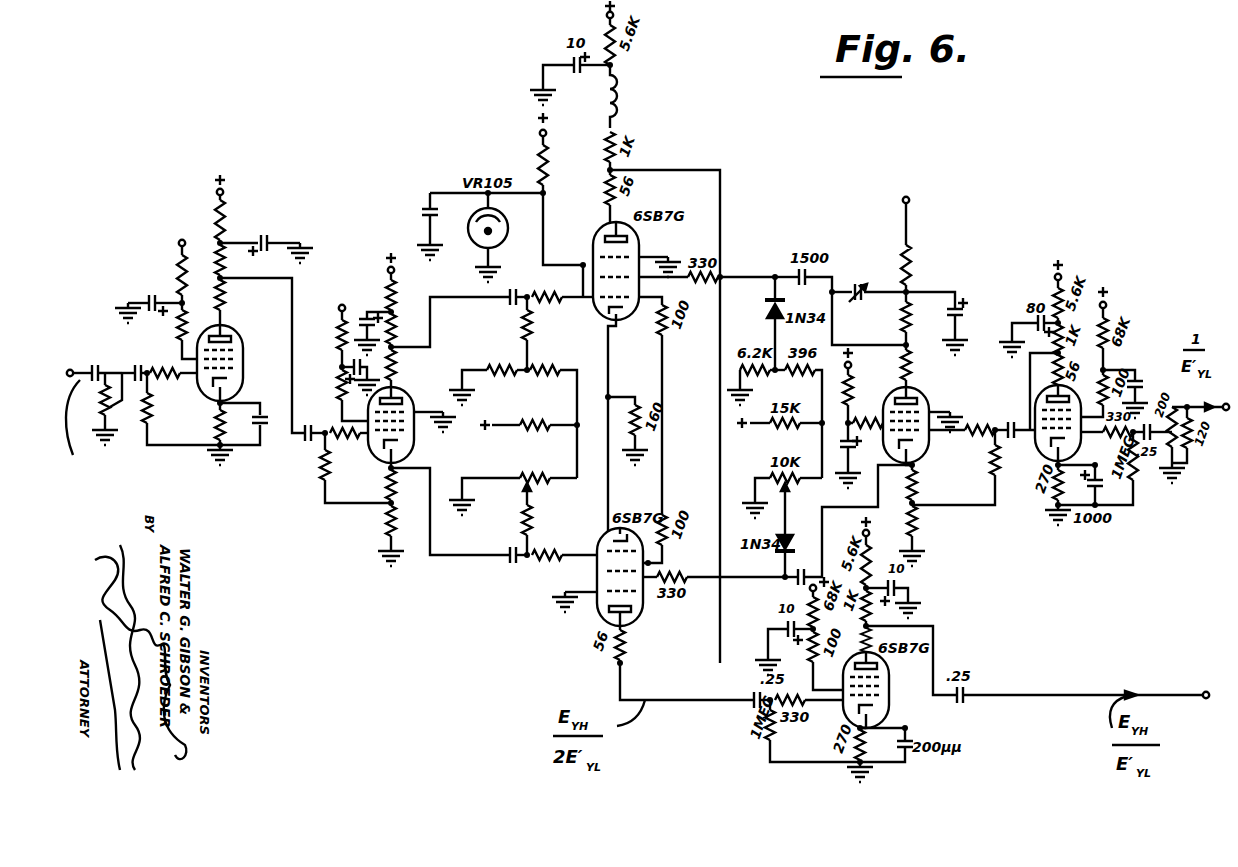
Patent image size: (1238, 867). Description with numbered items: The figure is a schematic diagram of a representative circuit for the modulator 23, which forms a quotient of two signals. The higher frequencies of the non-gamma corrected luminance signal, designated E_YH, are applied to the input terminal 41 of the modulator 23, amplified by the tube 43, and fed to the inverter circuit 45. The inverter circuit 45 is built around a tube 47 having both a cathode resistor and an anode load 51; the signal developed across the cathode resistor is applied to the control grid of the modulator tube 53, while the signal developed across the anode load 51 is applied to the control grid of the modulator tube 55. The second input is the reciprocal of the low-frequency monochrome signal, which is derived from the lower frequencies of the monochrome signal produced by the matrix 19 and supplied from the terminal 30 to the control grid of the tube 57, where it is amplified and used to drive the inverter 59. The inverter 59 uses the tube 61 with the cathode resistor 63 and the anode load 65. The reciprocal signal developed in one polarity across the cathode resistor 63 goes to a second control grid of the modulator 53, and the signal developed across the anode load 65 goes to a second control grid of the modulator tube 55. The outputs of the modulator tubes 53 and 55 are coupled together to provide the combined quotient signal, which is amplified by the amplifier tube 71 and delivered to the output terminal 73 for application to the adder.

The modulator circuit 23 is at (388, 137).
The input terminal 41 is at (70, 373).
The tube 43 is at (243, 354).
The inverter circuit 45 is at (401, 254).
The tube 47 is at (415, 453).
The anode load 51 is at (432, 287).
The matrix 19 is at (374, 478).
The modulator tube 53 is at (642, 611).
The modulator tube 55 is at (641, 247).
The tube 57 is at (1043, 398).
The inverter 59 is at (965, 184).
The tube 61 is at (929, 399).
The cathode resistor 63 is at (900, 470).
The anode load 65 is at (876, 324).
The amplifier tube 71 is at (902, 707).
The output terminal 73 is at (1209, 692).
The terminal 30 is at (1210, 368).